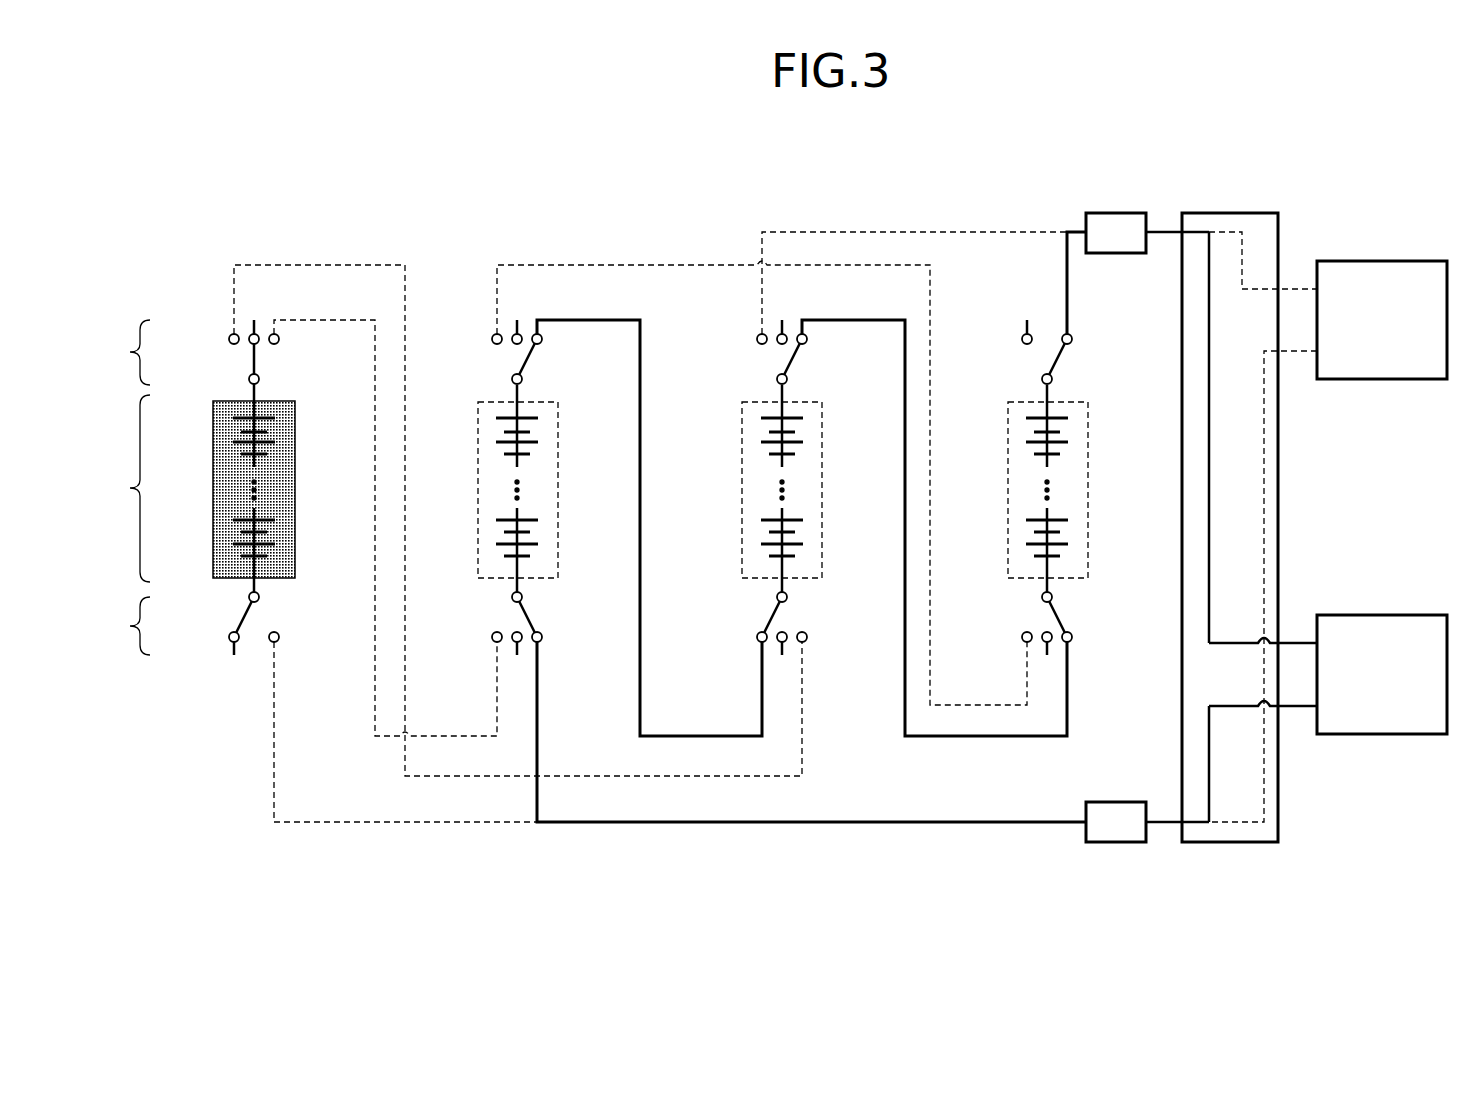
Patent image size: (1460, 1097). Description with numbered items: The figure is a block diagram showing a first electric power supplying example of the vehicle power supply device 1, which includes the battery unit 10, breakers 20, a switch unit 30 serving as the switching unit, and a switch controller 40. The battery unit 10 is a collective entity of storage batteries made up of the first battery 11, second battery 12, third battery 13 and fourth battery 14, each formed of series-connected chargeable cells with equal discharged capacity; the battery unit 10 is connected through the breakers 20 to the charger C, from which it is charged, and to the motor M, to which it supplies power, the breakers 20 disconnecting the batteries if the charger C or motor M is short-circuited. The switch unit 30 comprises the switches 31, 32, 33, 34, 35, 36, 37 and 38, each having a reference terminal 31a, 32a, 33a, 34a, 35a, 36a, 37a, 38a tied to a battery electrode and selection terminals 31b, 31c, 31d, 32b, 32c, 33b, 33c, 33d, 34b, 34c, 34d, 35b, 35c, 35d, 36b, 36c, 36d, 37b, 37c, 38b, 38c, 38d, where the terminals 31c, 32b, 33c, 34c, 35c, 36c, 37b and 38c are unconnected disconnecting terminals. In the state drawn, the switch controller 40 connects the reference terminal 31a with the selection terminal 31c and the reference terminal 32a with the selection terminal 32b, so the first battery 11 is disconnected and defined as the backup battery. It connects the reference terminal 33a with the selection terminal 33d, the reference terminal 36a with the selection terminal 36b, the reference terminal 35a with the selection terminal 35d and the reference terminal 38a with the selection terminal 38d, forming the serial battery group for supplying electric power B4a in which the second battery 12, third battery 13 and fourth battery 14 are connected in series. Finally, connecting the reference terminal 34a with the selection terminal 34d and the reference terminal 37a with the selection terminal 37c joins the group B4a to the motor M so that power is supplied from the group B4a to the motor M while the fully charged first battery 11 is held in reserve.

The vehicle power supply device 1 is at (976, 208).
The battery unit 10 is at (119, 488).
The first battery 11 is at (296, 437).
The second battery 12 is at (559, 440).
The third battery 13 is at (823, 440).
The fourth battery 14 is at (1089, 440).
The breaker 20 is at (1118, 195).
The switch unit 30 is at (119, 487).
The switch 31 is at (481, 520).
The reference terminal 31a is at (260, 381).
The selection terminal 31b is at (229, 339).
The selection terminal 31c is at (250, 334).
The selection terminal 31d is at (280, 340).
The switch 32 is at (348, 700).
The reference terminal 32a is at (249, 597).
The selection terminal 32b is at (229, 637).
The selection terminal 32c is at (280, 638).
The switch 33 is at (726, 498).
The reference terminal 33a is at (523, 381).
The selection terminal 33b is at (492, 339).
The selection terminal 33c is at (514, 334).
The selection terminal 33d is at (543, 340).
The switch 34 is at (755, 700).
The reference terminal 34a is at (512, 597).
The selection terminal 34b is at (492, 637).
The selection terminal 34c is at (512, 640).
The selection terminal 34d is at (543, 638).
The switch 35 is at (877, 484).
The reference terminal 35a is at (788, 381).
The selection terminal 35b is at (757, 339).
The selection terminal 35c is at (778, 334).
The selection terminal 35d is at (808, 340).
The switch 36 is at (784, 620).
The reference terminal 36a is at (777, 597).
The selection terminal 36b is at (757, 637).
The selection terminal 36c is at (777, 640).
The selection terminal 36d is at (808, 638).
The switch 37 is at (1049, 326).
The reference terminal 37a is at (1053, 381).
The selection terminal 37b is at (1022, 339).
The selection terminal 37c is at (1073, 340).
The switch 38 is at (1049, 620).
The reference terminal 38a is at (1042, 597).
The selection terminal 38b is at (1022, 637).
The selection terminal 38c is at (1042, 640).
The selection terminal 38d is at (1073, 638).
The switch controller 40 is at (1238, 195).
The serial battery group for supplying electric power B4a is at (575, 300).
The charger C is at (1418, 244).
The motor M is at (1418, 598).